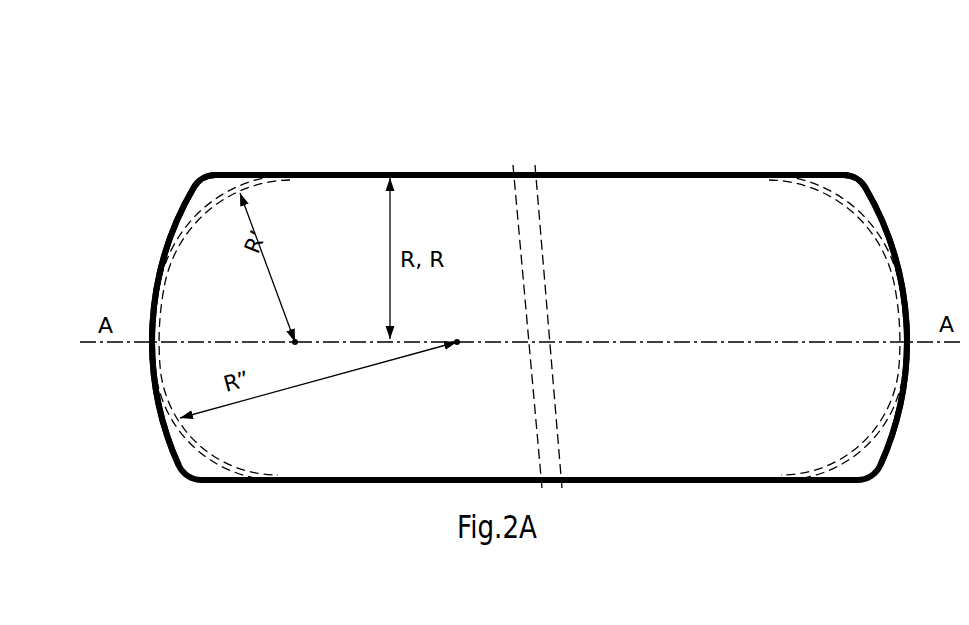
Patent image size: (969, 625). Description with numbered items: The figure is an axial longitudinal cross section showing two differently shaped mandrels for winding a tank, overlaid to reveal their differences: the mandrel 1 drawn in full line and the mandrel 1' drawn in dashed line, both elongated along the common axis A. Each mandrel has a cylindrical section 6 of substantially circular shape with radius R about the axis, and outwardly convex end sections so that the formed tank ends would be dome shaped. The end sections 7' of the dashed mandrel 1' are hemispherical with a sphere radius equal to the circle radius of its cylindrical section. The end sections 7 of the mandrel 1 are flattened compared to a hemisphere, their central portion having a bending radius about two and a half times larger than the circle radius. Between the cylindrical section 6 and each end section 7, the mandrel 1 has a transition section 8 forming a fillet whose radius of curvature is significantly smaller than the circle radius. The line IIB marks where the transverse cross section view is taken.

The mandrel 1 is at (529, 284).
The mandrel 1' is at (513, 291).
The cylindrical section 6 is at (530, 131).
The end section 7 is at (533, 309).
The end section 7' is at (533, 281).
The transition section 8 is at (203, 175).
The transverse cross section line IIB is at (525, 163).